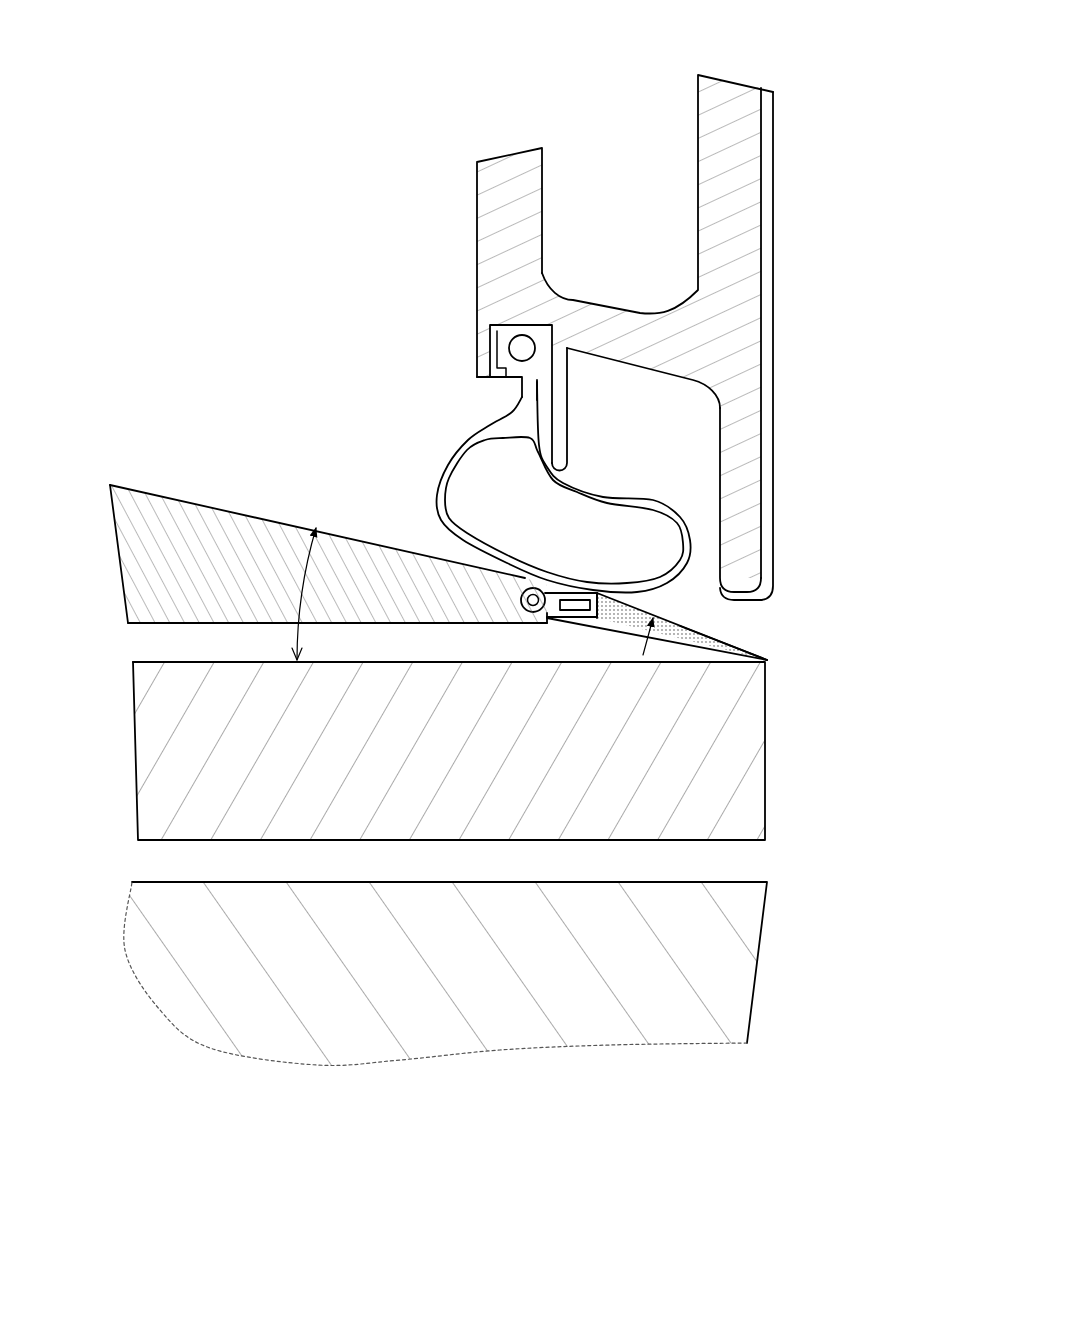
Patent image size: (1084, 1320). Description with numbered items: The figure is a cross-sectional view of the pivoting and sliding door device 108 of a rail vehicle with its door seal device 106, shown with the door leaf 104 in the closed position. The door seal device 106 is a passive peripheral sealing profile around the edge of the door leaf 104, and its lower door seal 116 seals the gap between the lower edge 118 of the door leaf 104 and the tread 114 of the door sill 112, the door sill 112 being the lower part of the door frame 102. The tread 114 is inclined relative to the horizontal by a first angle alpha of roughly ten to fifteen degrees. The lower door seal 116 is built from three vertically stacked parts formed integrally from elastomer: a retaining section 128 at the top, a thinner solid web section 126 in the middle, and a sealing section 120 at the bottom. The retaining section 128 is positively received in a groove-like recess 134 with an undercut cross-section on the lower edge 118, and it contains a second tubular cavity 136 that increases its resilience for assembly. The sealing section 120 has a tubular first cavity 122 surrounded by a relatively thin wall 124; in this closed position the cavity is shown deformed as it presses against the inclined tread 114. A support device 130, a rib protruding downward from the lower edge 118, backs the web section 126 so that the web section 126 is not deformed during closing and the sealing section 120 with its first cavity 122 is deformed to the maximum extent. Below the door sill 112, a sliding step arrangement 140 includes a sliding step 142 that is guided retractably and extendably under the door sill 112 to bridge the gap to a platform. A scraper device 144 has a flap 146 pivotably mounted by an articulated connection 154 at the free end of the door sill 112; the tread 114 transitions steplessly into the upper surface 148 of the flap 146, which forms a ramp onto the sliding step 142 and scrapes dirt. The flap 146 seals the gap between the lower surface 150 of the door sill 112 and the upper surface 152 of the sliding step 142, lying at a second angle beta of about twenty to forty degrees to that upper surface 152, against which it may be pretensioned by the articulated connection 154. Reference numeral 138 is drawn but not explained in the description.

The door frame 102 is at (137, 563).
The door leaf 104 is at (503, 253).
The door seal device 106 is at (348, 335).
The pivoting and sliding door device 108 is at (540, 135).
The door sill 112 is at (210, 530).
The tread 114 is at (150, 488).
The lower door seal 116 is at (465, 422).
The lower edge 118 is at (497, 298).
The sealing section 120 is at (455, 453).
The first cavity 122 is at (553, 512).
The wall 124 is at (438, 481).
The web section 126 is at (526, 412).
The retaining section 128 is at (497, 340).
The support device 130 is at (558, 425).
The groove-like recess 134 is at (512, 325).
The second cavity 136 is at (522, 345).
The bead 138 is at (522, 577).
The sliding step arrangement 140 is at (790, 690).
The sliding step 142 is at (714, 774).
The scraper device 144 is at (697, 627).
The flap 146 is at (722, 633).
The upper surface 148 is at (712, 637).
The lower surface 150 is at (410, 622).
The upper surface 152 is at (273, 662).
The articulated connection 154 is at (535, 620).